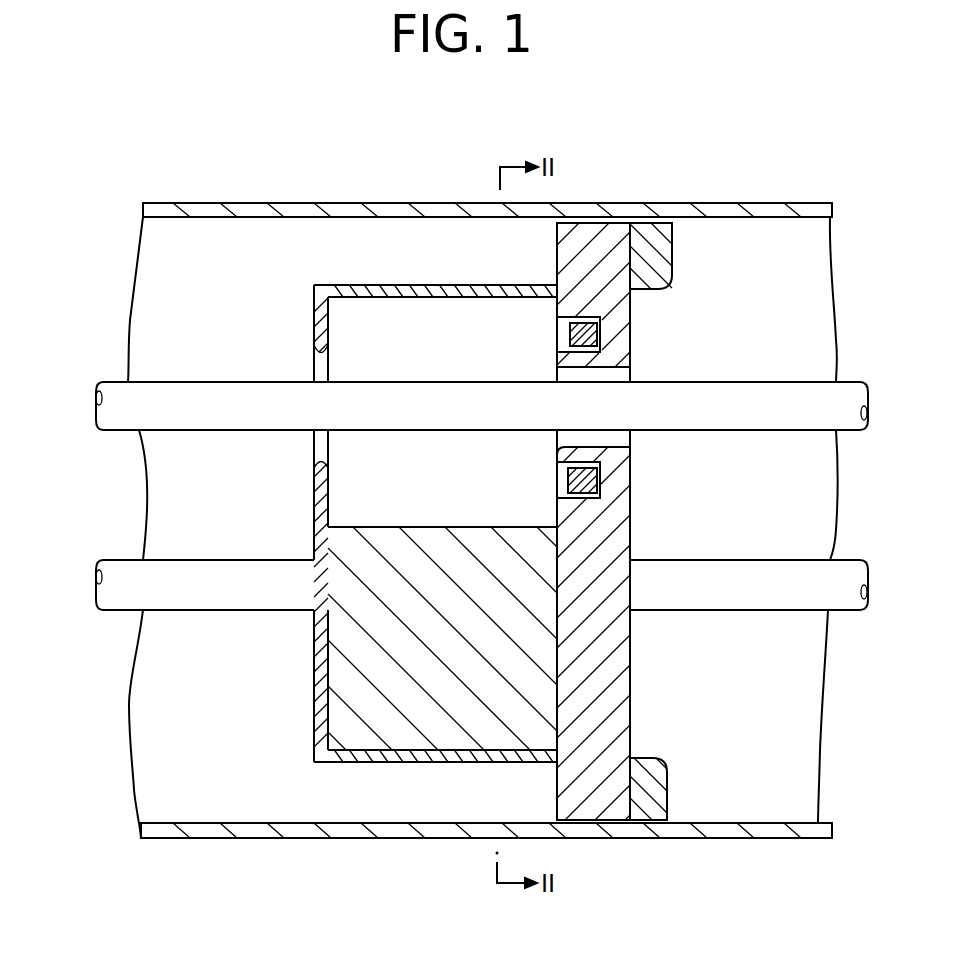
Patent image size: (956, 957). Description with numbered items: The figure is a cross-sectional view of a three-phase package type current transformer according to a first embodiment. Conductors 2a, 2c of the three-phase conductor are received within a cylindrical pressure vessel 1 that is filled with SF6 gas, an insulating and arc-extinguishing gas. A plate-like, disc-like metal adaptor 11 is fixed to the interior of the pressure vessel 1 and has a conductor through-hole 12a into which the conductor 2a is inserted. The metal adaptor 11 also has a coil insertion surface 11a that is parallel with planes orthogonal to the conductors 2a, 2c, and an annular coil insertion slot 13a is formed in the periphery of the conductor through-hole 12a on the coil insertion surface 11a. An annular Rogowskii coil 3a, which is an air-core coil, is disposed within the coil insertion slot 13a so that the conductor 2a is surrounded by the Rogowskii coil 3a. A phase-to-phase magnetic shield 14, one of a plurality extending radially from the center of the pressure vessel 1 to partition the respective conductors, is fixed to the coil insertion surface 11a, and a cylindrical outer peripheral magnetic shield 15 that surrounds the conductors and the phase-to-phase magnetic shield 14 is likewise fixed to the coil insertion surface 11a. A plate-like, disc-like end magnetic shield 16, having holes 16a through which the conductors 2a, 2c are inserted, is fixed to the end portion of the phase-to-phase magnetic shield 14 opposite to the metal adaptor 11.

The pressure vessel 1 is at (720, 207).
The conductor 2a is at (118, 381).
The conductor 2c is at (122, 559).
The Rogowskii coil 3a is at (601, 335).
The metal adaptor 11 is at (600, 705).
The coil insertion surface 11a is at (555, 783).
The conductor through-hole 12a is at (618, 376).
The coil insertion slot 13a is at (573, 318).
The phase-to-phase magnetic shield 14 is at (340, 708).
The outer peripheral magnetic shield 15 is at (388, 763).
The end magnetic shield 16 is at (313, 656).
The hole 16a is at (315, 364).